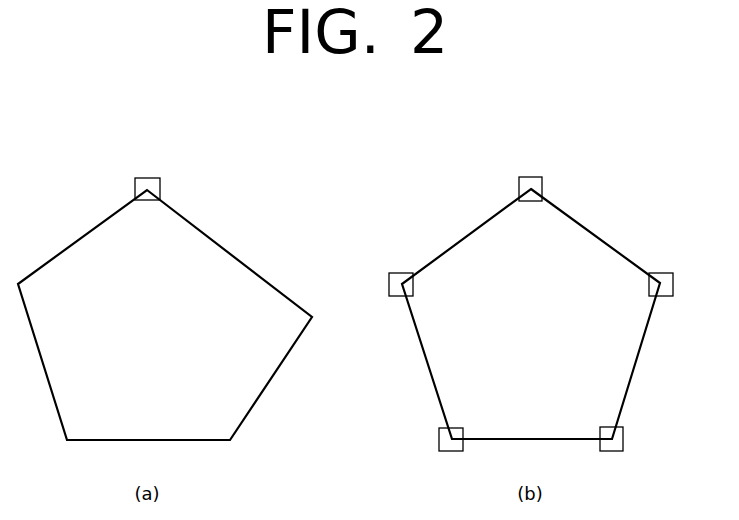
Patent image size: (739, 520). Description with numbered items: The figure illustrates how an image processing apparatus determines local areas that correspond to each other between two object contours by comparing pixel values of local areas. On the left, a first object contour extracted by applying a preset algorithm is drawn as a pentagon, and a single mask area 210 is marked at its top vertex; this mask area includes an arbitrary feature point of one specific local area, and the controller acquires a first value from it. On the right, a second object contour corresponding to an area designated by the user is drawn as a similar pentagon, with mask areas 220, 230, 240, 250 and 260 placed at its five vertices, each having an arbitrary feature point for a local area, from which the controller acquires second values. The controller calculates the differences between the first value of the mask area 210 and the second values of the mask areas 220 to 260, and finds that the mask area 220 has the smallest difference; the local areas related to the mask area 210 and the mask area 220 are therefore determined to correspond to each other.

The mask area 210 is at (152, 178).
The mask area 220 is at (536, 177).
The mask area 230 is at (663, 273).
The mask area 240 is at (623, 439).
The mask area 250 is at (439, 439).
The mask area 260 is at (398, 273).